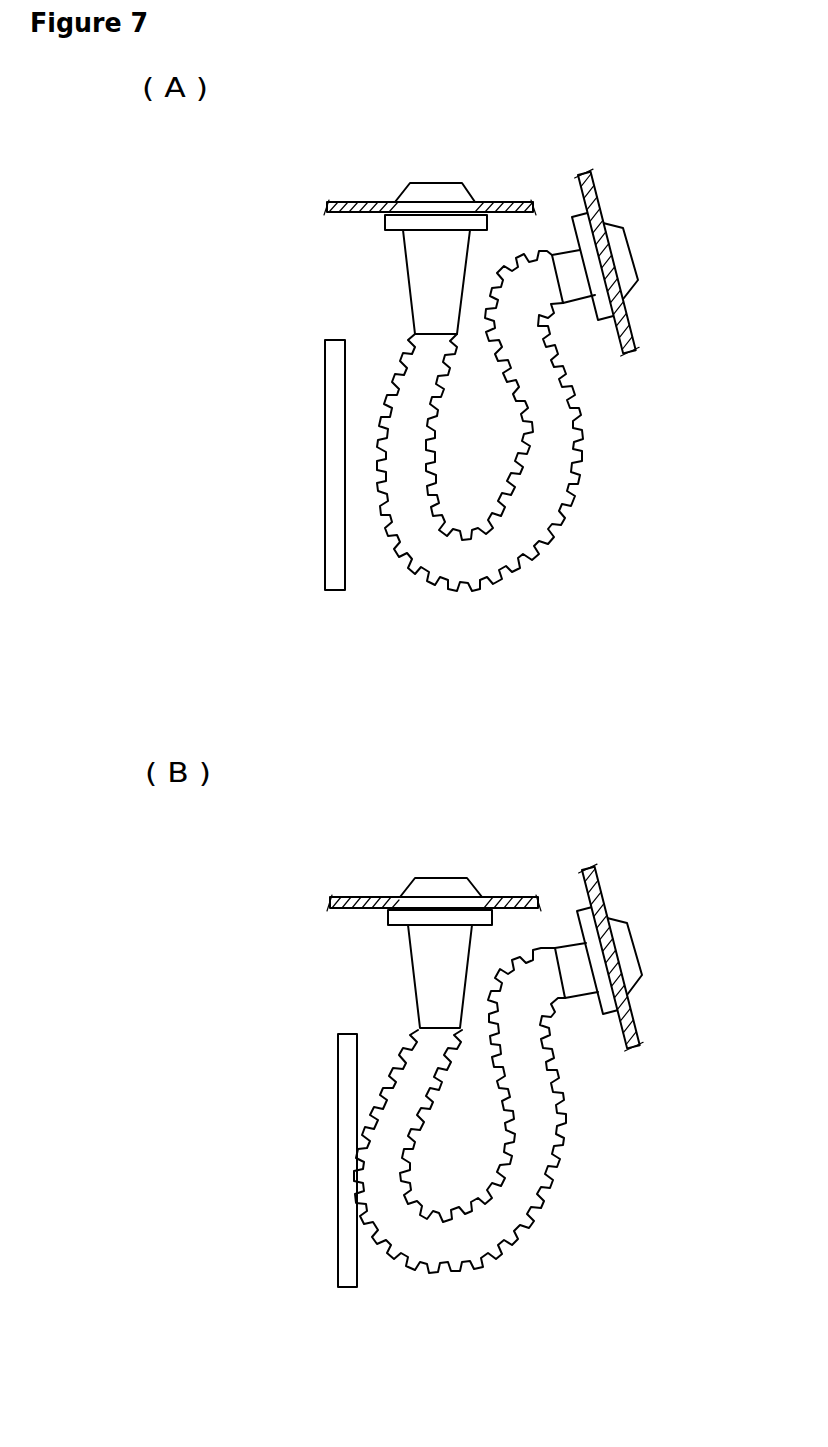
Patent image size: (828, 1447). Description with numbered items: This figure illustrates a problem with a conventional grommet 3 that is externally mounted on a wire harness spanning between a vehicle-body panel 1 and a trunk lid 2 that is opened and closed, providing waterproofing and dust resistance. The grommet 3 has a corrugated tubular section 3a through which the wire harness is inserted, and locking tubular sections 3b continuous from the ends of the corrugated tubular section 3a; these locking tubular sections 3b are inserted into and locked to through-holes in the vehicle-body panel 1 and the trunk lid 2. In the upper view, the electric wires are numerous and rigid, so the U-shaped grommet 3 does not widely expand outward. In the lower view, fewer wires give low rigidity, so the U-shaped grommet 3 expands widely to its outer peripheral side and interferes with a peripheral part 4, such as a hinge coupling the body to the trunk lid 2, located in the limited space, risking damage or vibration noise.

The vehicle-body panel 1 is at (353, 203).
The trunk lid 2 is at (628, 327).
The grommet 3 is at (487, 588).
The corrugated tubular section 3a is at (553, 538).
The locking tubular sections 3b is at (433, 190).
The peripheral part 4 is at (328, 384).